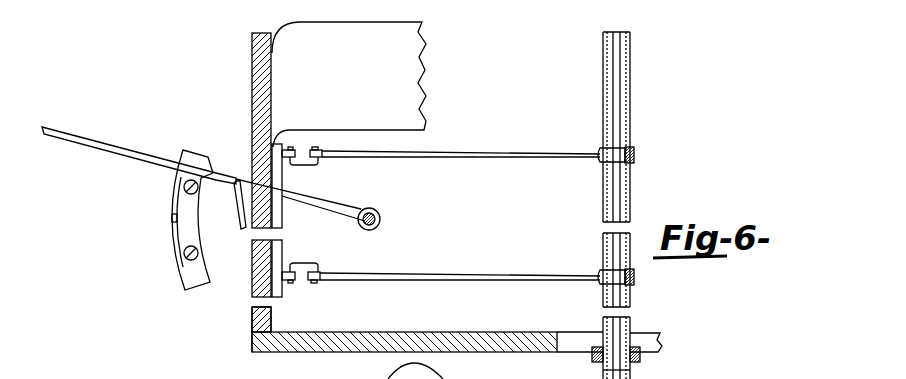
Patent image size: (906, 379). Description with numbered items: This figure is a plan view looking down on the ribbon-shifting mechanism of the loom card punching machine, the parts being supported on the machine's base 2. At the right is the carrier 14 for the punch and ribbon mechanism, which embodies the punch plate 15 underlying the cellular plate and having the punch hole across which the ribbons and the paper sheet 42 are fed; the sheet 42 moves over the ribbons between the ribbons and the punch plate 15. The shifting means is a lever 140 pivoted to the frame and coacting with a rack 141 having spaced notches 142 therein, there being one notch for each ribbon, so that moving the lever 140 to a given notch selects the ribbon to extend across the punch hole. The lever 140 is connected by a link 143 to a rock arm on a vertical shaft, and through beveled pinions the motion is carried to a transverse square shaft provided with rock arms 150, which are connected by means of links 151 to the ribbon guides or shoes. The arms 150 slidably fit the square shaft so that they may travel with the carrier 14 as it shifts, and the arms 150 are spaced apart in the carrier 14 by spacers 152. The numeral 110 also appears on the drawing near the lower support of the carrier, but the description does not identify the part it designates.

The base 2 is at (380, 216).
The carrier 14 is at (432, 333).
The punch plate 15 is at (252, 328).
The paper sheet 42 is at (415, 58).
The post base 110 is at (649, 374).
The lever 140 is at (126, 152).
The rack 141 is at (180, 257).
The notches 142 is at (172, 218).
The link 143 is at (238, 223).
The rock arms 150 is at (473, 156).
The links 151 is at (312, 166).
The spacers 152 is at (603, 190).